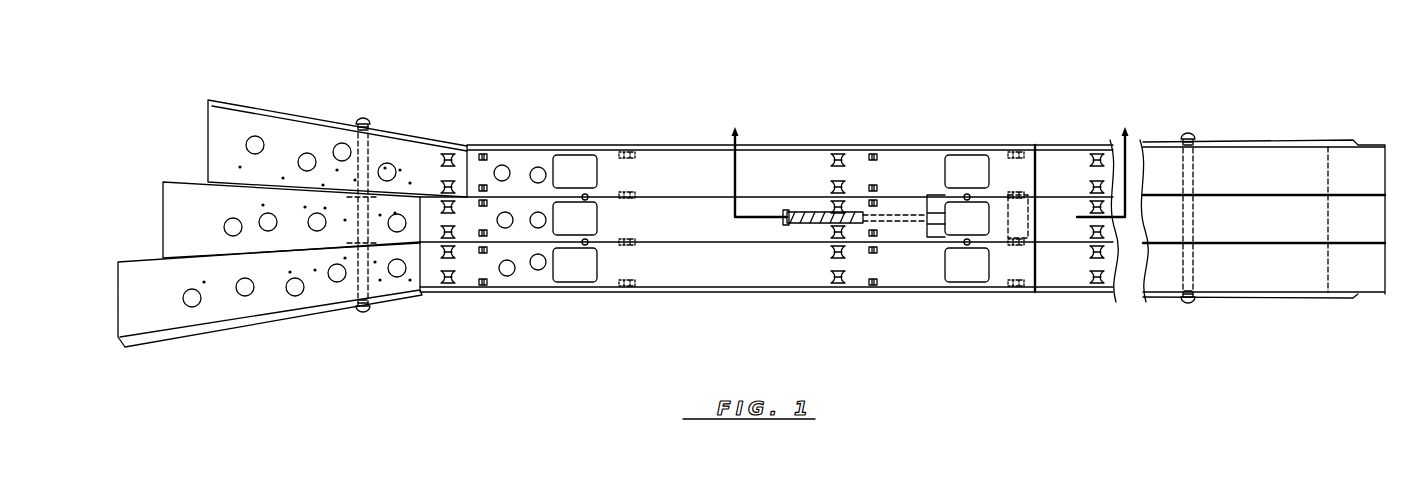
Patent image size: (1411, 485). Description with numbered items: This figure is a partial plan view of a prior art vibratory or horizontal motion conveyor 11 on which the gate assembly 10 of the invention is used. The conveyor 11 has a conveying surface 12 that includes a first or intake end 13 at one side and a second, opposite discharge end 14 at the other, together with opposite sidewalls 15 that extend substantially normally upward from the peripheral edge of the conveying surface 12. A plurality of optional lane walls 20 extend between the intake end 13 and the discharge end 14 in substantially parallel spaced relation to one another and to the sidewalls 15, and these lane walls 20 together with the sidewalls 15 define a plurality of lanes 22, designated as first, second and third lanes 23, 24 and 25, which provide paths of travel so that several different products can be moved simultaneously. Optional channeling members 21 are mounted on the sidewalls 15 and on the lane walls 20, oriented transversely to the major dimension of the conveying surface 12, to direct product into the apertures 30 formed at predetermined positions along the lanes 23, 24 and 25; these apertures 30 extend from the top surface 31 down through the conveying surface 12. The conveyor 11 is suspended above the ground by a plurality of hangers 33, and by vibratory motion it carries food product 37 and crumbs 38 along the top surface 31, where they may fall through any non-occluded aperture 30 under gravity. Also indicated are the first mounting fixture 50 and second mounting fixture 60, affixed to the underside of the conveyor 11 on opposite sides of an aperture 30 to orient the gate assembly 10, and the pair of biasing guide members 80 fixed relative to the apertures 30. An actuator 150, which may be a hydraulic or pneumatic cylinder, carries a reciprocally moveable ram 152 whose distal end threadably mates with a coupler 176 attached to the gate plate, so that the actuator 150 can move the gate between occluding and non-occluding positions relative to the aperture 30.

The gate assembly 10 is at (857, 205).
The vibratory conveyor 11 is at (672, 147).
The conveying surface 12 is at (812, 172).
The first or intake end 13 is at (243, 125).
The discharge end 14 is at (1278, 162).
The sidewalls 15 is at (768, 145).
The lane walls 20 is at (476, 202).
The channeling members 21 is at (585, 150).
The lanes 22 is at (765, 277).
The first lane 23 is at (1151, 177).
The second lane 24 is at (1151, 230).
The third lane 25 is at (1151, 280).
The apertures 30 is at (597, 165).
The top surface 31 is at (686, 187).
The hangers 33 is at (369, 113).
The food product 37 is at (243, 287).
The crumbs 38 is at (330, 138).
The first mounting fixture 50 is at (634, 166).
The second mounting fixture 60 is at (450, 152).
The biasing guide members 80 is at (490, 155).
The actuator 150 is at (822, 226).
The ram 152 is at (908, 215).
The coupler 176 is at (938, 237).